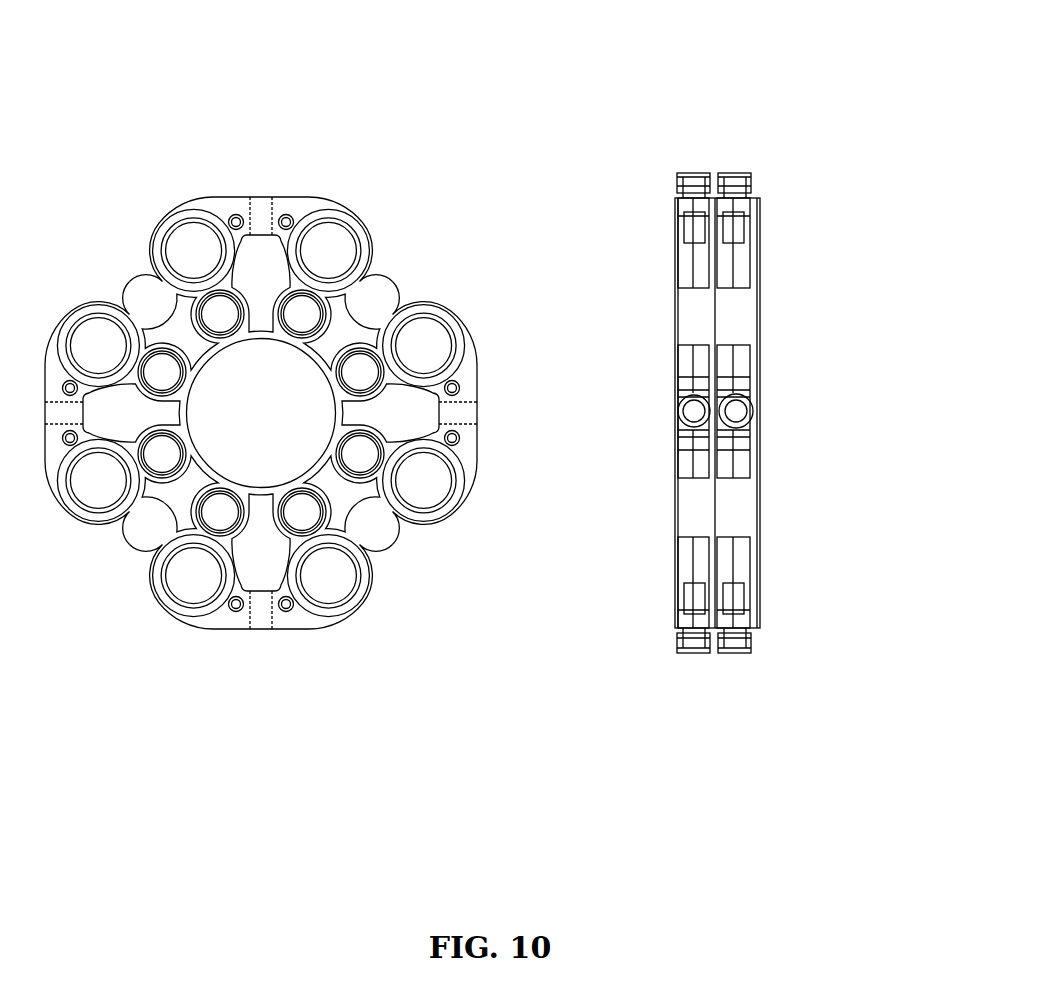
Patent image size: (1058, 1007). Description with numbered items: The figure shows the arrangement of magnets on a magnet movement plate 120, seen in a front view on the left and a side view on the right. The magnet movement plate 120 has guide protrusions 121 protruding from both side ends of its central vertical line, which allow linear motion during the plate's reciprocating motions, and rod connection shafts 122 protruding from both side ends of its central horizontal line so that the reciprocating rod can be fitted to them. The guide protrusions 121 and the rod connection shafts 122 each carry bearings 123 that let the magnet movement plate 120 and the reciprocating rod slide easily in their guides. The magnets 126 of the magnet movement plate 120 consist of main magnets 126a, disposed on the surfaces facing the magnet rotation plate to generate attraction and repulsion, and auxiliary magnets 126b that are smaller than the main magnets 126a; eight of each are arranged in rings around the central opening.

The magnet movement plate 120 is at (362, 167).
The guide protrusions 121 is at (743, 658).
The rod connection shafts 122 is at (758, 400).
The bearings 123 is at (757, 643).
The magnets 126 is at (508, 530).
The main magnets 126a is at (437, 497).
The auxiliary magnets 126b is at (360, 460).